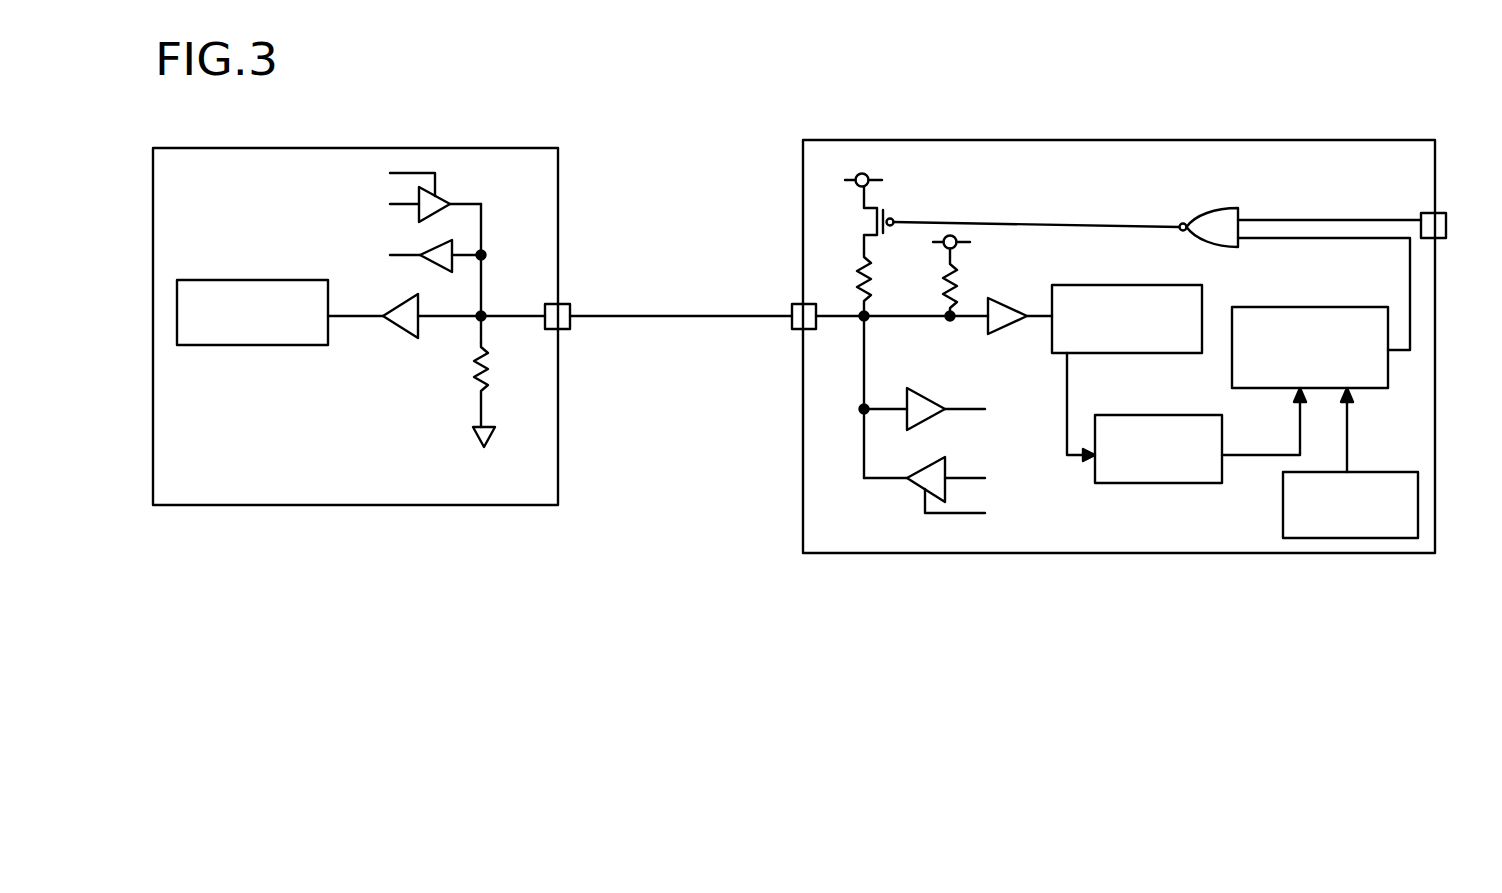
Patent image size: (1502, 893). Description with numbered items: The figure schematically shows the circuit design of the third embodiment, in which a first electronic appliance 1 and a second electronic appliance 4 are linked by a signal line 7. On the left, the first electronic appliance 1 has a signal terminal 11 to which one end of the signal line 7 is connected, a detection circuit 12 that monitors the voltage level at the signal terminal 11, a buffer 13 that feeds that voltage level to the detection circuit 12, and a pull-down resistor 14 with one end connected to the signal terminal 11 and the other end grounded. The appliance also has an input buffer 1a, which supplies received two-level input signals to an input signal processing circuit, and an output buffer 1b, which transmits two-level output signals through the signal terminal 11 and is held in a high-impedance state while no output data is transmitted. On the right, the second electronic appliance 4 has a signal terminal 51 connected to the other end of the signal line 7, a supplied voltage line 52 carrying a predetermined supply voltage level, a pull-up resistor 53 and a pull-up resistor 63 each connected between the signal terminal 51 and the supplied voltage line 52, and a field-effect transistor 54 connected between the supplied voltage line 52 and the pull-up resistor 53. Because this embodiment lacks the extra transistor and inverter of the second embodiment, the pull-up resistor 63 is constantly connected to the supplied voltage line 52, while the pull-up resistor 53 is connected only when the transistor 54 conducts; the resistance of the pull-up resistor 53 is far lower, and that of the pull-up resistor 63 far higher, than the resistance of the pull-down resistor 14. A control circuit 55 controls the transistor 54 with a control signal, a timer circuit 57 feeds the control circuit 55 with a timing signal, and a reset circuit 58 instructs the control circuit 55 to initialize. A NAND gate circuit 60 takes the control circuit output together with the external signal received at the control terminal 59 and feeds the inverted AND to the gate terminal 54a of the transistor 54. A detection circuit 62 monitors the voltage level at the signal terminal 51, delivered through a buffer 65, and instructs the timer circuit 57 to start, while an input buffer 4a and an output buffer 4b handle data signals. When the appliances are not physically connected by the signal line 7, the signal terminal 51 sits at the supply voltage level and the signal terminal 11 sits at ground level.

The first electronic appliance 1 is at (235, 509).
The input buffer 1a is at (428, 243).
The output buffer 1b is at (443, 198).
The second electronic appliance 4 is at (940, 557).
The input buffer 4a is at (925, 393).
The output buffer 4b is at (918, 490).
The signal line 7 is at (683, 320).
The signal terminal 11 is at (573, 303).
The detection circuit 12 is at (309, 279).
The buffer 13 is at (399, 333).
The pull-down resistor 14 is at (470, 370).
The signal terminal 51 is at (790, 307).
The supplied voltage line 52 is at (848, 180).
The pull-up resistor 53 is at (868, 280).
The field-effect transistor 54 is at (961, 206).
The gate terminal 54a is at (894, 221).
The control circuit 55 is at (1292, 305).
The timer circuit 57 is at (1130, 483).
The reset circuit 58 is at (1388, 471).
The control terminal 59 is at (1448, 220).
The NAND gate circuit 60 is at (1218, 208).
The detection circuit 62 is at (1117, 285).
The pull-up resistor 63 is at (953, 277).
The buffer 65 is at (1000, 340).